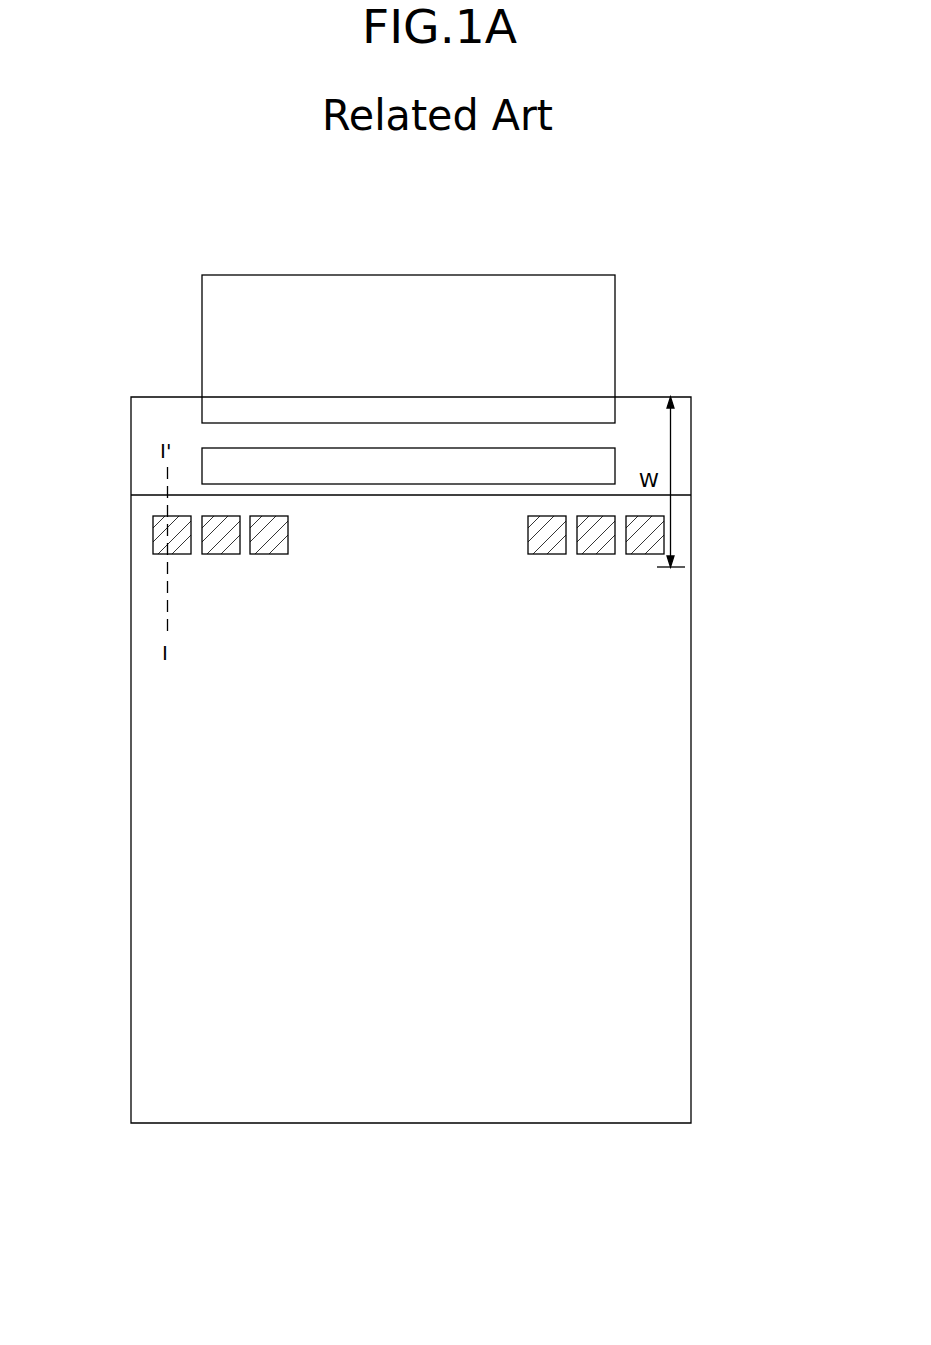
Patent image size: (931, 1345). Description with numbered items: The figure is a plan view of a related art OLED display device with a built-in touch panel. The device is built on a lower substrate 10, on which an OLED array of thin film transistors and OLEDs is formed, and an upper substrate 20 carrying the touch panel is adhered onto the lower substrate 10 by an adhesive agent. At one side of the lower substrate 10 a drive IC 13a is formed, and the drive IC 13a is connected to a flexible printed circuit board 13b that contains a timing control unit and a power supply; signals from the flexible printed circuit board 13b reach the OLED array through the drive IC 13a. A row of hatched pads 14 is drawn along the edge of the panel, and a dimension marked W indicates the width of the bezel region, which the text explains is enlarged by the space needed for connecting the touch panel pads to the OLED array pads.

The lower substrate 10 is at (691, 450).
The upper substrate 20 is at (691, 818).
The flexible printed circuit board 13b is at (615, 298).
The drive IC 13a is at (615, 466).
The pad electrodes 14 is at (157, 530).